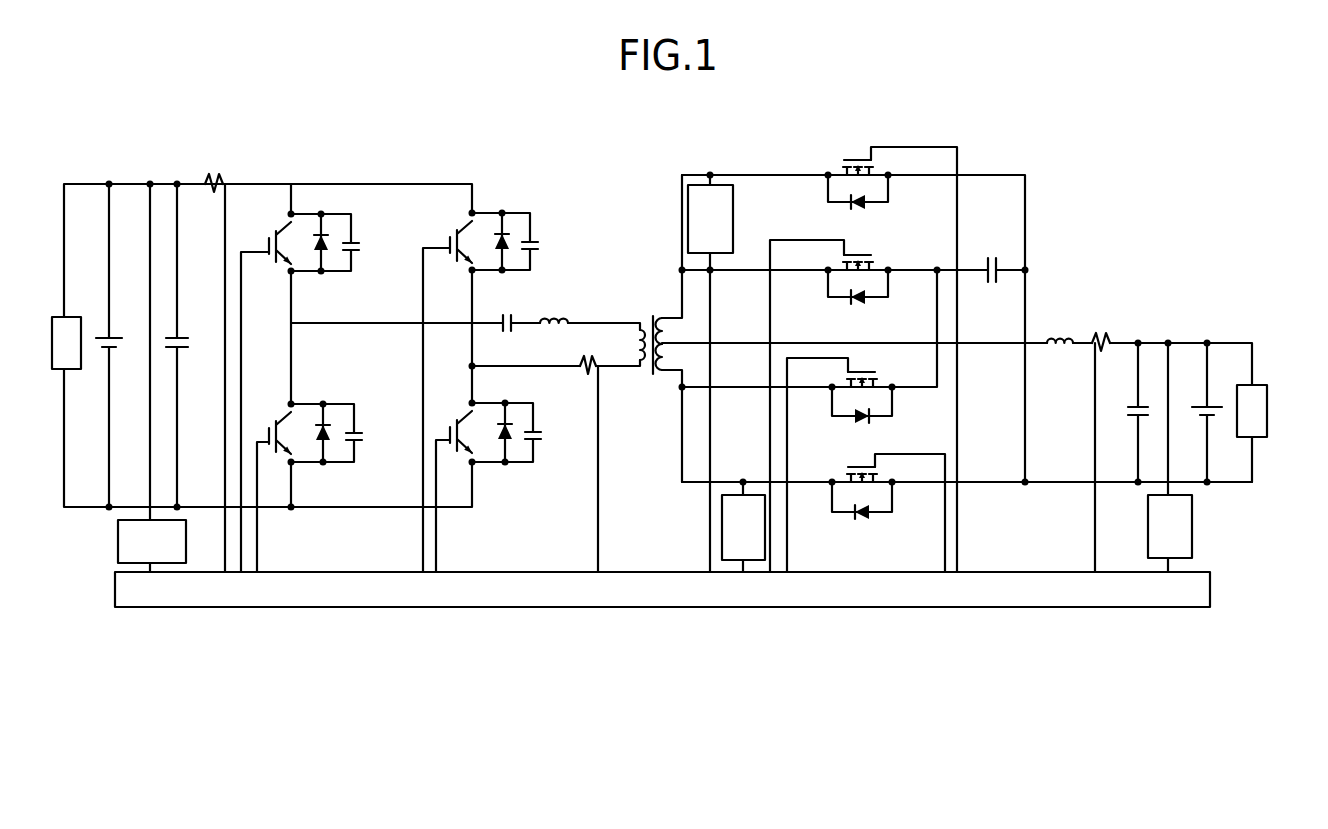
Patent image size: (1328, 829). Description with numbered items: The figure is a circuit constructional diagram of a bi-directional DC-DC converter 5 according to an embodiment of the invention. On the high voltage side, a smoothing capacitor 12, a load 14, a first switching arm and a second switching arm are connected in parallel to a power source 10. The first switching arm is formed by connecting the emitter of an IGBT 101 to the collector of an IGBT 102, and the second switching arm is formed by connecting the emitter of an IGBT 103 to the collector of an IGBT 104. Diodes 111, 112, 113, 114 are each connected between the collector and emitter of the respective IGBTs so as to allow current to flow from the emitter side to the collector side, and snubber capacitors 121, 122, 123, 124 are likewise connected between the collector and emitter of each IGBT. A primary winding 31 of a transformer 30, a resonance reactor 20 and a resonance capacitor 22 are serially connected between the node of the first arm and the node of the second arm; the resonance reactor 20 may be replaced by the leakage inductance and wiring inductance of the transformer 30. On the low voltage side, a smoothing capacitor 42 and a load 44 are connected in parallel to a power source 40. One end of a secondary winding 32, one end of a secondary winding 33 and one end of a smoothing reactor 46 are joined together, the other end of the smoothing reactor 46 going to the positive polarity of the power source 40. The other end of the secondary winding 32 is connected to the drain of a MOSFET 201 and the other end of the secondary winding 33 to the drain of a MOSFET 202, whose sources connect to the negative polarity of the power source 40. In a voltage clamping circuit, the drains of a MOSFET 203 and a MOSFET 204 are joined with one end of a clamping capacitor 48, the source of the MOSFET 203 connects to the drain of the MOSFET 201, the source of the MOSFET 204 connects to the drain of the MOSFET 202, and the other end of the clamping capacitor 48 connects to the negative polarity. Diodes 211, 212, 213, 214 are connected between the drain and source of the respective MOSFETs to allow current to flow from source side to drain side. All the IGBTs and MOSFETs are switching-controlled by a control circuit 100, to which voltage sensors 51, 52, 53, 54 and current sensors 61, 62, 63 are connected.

The bi-directional DC-DC converter 5 is at (521, 690).
The power source 10 is at (113, 335).
The smoothing capacitor 12 is at (180, 337).
The load 14 is at (55, 316).
The resonance reactor 20 is at (568, 317).
The resonance capacitor 22 is at (507, 313).
The transformer 30 is at (647, 318).
The primary winding 31 is at (634, 345).
The secondary winding 32 is at (667, 357).
The secondary winding 33 is at (667, 330).
The power source 40 is at (1200, 405).
The smoothing capacitor 42 is at (1130, 409).
The load 44 is at (1268, 400).
The smoothing reactor 46 is at (1062, 336).
The clamping capacitor 48 is at (992, 257).
The voltage sensor 51 is at (117, 542).
The voltage sensor 52 is at (1193, 528).
The voltage sensor 53 is at (721, 530).
The voltage sensor 54 is at (687, 202).
The current sensor 61 is at (216, 178).
The current sensor 62 is at (1108, 338).
The current sensor 63 is at (588, 374).
The control circuit 100 is at (646, 608).
The IGBT 101 is at (280, 236).
The IGBT 102 is at (280, 425).
The IGBT 103 is at (462, 235).
The IGBT 104 is at (464, 424).
The diode 111 is at (331, 257).
The diode 112 is at (331, 420).
The diode 113 is at (510, 226).
The diode 114 is at (515, 440).
The snubber capacitor 121 is at (362, 247).
The snubber capacitor 122 is at (364, 437).
The snubber capacitor 123 is at (538, 245).
The snubber capacitor 124 is at (541, 440).
The MOSFET 201 is at (850, 467).
The MOSFET 202 is at (844, 160).
The MOSFET 203 is at (880, 372).
The MOSFET 204 is at (878, 255).
The diode 211 is at (870, 516).
The diode 212 is at (848, 204).
The diode 213 is at (872, 418).
The diode 214 is at (848, 300).